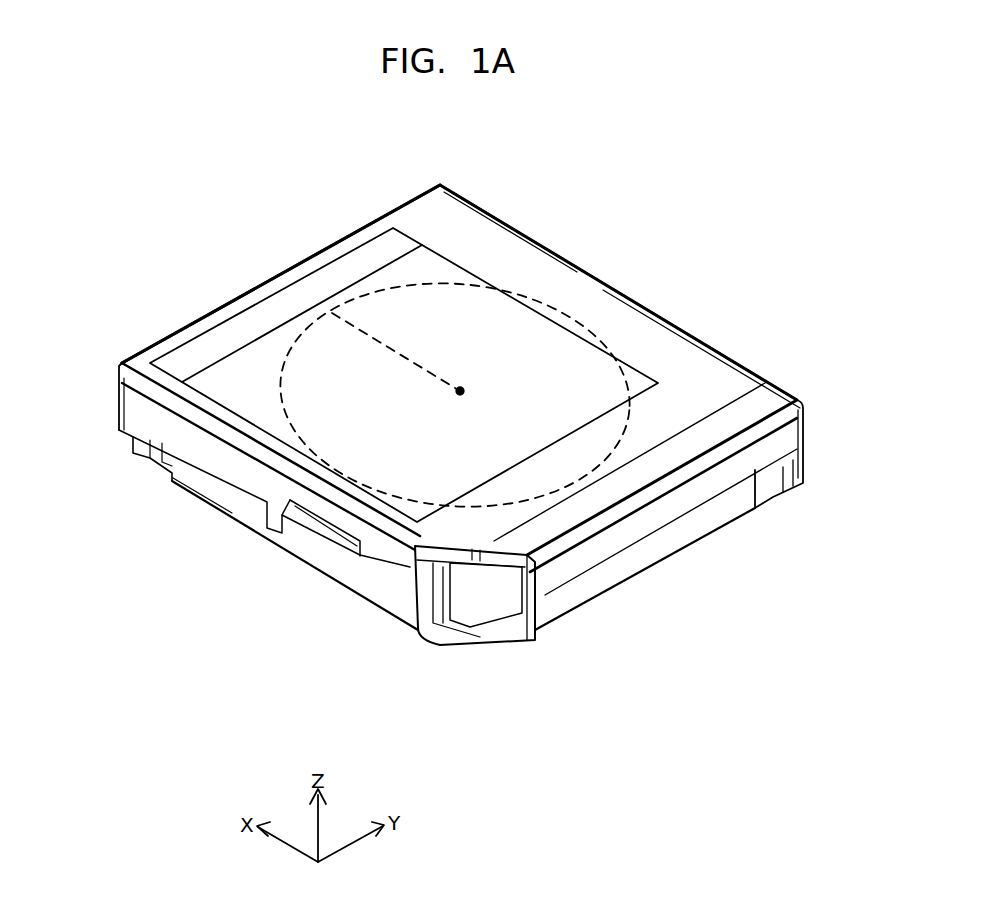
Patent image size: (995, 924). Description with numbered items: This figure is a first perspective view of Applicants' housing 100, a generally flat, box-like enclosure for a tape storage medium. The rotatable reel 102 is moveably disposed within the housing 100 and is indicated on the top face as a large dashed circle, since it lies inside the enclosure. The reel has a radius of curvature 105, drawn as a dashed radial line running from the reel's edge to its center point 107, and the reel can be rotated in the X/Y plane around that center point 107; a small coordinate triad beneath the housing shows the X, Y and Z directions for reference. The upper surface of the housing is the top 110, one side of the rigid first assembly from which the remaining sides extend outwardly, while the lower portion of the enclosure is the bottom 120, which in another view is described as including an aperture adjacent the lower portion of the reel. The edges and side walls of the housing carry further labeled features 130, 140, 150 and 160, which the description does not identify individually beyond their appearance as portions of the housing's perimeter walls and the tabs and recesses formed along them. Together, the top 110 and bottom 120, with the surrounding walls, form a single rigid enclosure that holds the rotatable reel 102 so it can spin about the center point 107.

The housing 100 is at (468, 712).
The rotatable reel 102 is at (610, 348).
The radius of curvature 105 is at (388, 346).
The center point 107 is at (462, 390).
The top 110 is at (522, 257).
The bottom 120 is at (333, 577).
The side frame 130 is at (783, 445).
The edge lip 140 is at (207, 315).
The side protrusion 150 is at (147, 422).
The rim 160 is at (610, 288).